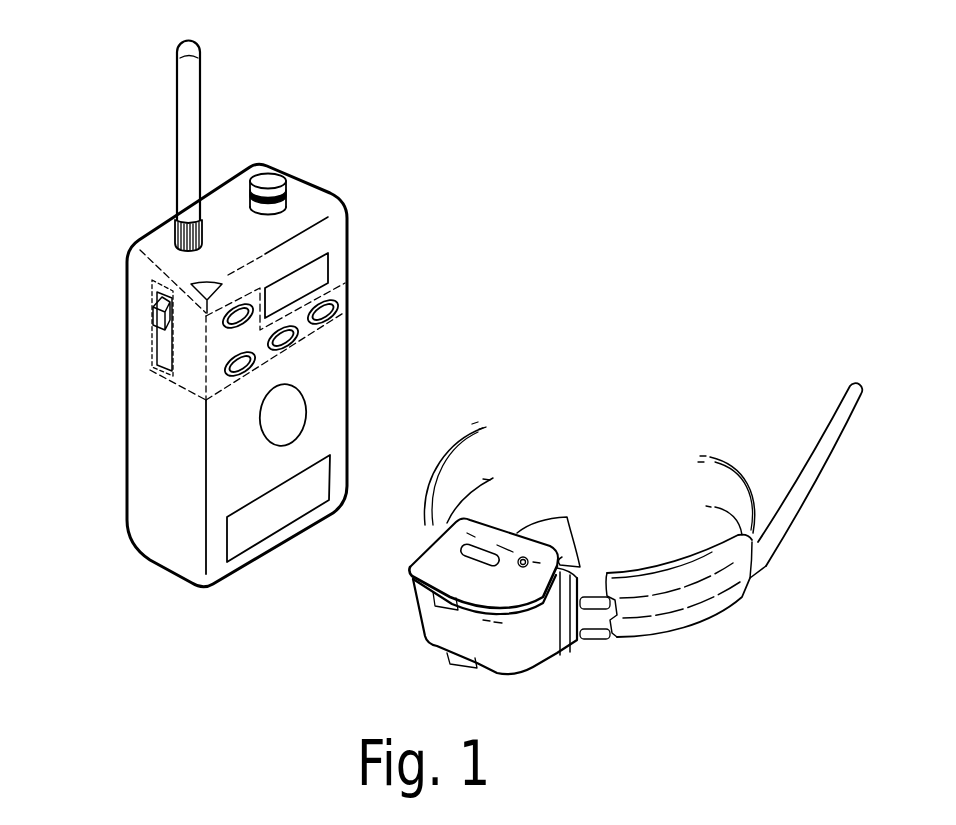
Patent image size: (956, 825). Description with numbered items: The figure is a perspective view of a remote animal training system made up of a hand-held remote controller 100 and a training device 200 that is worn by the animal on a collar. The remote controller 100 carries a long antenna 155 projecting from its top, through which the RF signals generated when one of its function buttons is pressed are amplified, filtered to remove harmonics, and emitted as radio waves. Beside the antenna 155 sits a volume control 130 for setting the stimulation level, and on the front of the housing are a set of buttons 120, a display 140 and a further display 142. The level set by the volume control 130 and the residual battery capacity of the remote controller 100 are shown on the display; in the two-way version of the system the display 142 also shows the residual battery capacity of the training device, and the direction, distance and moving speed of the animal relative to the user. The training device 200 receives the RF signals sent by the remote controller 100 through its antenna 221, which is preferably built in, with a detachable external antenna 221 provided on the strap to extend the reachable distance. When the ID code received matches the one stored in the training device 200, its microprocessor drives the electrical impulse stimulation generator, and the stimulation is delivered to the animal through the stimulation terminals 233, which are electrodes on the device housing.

The remote controller 100 is at (300, 314).
The antenna 155 is at (195, 102).
The volume control 130 is at (273, 185).
The display 140 is at (313, 270).
The display 142 is at (293, 415).
The buttons 120 is at (150, 343).
The training device 200 is at (635, 501).
The antenna 221 is at (825, 442).
The stimulation terminals 233 is at (567, 517).